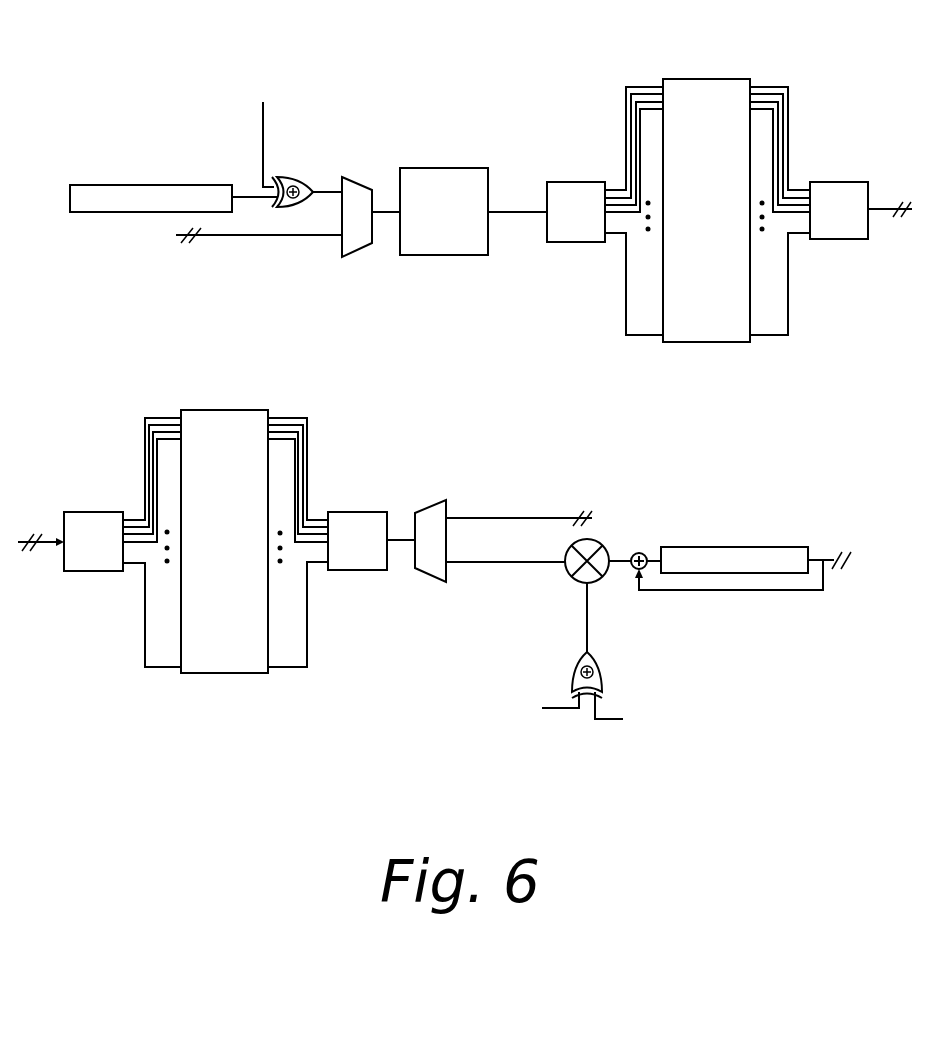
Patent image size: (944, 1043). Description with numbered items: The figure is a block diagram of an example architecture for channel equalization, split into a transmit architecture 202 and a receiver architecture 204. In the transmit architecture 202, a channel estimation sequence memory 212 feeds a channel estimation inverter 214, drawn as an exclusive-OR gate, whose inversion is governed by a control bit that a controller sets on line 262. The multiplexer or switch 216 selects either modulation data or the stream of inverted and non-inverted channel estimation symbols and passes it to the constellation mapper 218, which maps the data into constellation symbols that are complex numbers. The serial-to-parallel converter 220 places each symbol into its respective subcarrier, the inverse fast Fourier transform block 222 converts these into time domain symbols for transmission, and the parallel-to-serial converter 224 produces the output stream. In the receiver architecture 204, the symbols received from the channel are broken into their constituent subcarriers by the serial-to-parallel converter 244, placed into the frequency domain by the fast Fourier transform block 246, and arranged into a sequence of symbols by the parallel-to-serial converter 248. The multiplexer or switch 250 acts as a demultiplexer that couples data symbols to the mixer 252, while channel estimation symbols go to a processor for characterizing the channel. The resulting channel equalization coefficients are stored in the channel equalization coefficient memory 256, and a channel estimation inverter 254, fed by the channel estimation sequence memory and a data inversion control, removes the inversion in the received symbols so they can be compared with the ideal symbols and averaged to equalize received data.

The transmit architecture 202 is at (497, 60).
The receiver architecture 204 is at (482, 402).
The channel estimation sequence memory 212 is at (178, 187).
The channel estimation inverter 214 is at (294, 177).
The multiplexer or switch 216 is at (354, 184).
The constellation mapper 218 is at (425, 223).
The serial-to-parallel converter 220 is at (557, 223).
The inverse fast Fourier transform block 222 is at (688, 223).
The parallel-to-serial converter 224 is at (820, 223).
The serial-to-parallel converter 244 is at (75, 552).
The fast Fourier transform block 246 is at (205, 552).
The parallel-to-serial converter 248 is at (338, 552).
The multiplexer or switch 250 is at (430, 508).
The mixer 252 is at (609, 544).
The channel estimation inverter 254 is at (600, 664).
The channel equalization coefficient memory 256 is at (735, 547).
The line 262 is at (264, 144).